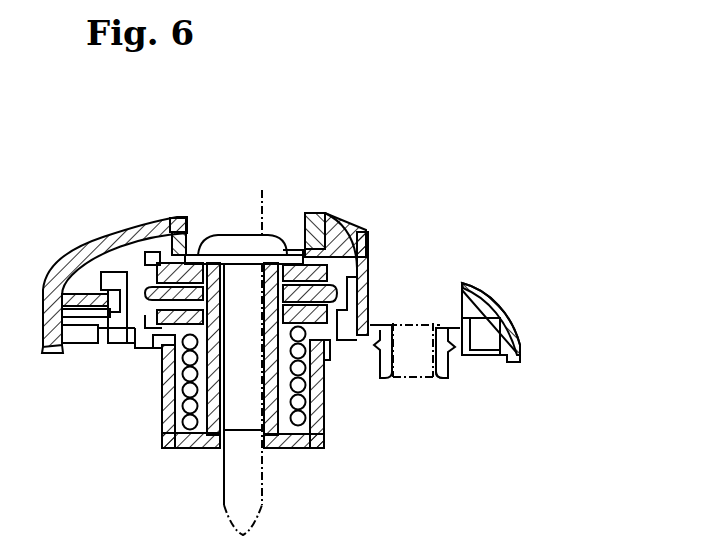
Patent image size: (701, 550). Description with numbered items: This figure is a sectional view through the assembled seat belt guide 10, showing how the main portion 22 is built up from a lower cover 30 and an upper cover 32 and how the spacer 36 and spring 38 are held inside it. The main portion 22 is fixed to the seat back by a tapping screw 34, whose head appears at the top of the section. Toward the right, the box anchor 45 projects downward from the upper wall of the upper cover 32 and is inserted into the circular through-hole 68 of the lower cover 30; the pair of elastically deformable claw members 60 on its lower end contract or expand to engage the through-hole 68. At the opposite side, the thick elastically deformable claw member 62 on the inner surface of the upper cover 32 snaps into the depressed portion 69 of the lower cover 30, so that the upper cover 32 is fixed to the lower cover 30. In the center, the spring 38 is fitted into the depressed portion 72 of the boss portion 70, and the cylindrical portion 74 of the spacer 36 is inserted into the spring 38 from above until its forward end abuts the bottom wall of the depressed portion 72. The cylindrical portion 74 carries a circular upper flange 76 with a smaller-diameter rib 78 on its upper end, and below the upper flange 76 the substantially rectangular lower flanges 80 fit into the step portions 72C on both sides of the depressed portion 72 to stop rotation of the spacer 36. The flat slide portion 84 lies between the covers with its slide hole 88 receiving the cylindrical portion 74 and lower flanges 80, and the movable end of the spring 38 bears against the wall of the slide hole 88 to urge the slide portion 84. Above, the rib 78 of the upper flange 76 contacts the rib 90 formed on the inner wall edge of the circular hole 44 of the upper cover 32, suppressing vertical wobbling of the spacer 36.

The seat belt guide 10 is at (143, 160).
The main portion 22 is at (575, 270).
The lower cover 30 is at (510, 320).
The upper cover 32 is at (490, 300).
The tapping screw 34 is at (263, 235).
The spacer 36 is at (150, 247).
The spring 38 is at (305, 410).
The circular hole 44 is at (188, 223).
The box anchor 45 is at (400, 346).
The claw members 60 is at (378, 377).
The claw member 62 is at (70, 274).
The through-hole 68 is at (440, 332).
The depressed portion 69 is at (115, 328).
The boss portion 70 is at (167, 445).
The depressed portion 72 is at (287, 448).
The step portions 72C is at (148, 372).
The cylindrical portion 74 is at (154, 393).
The upper flange 76 is at (366, 233).
The rib 78 is at (332, 255).
The lower flanges 80 is at (368, 300).
The slide portion 84 is at (112, 286).
The slide hole 88 is at (228, 250).
The rib 90 is at (288, 233).